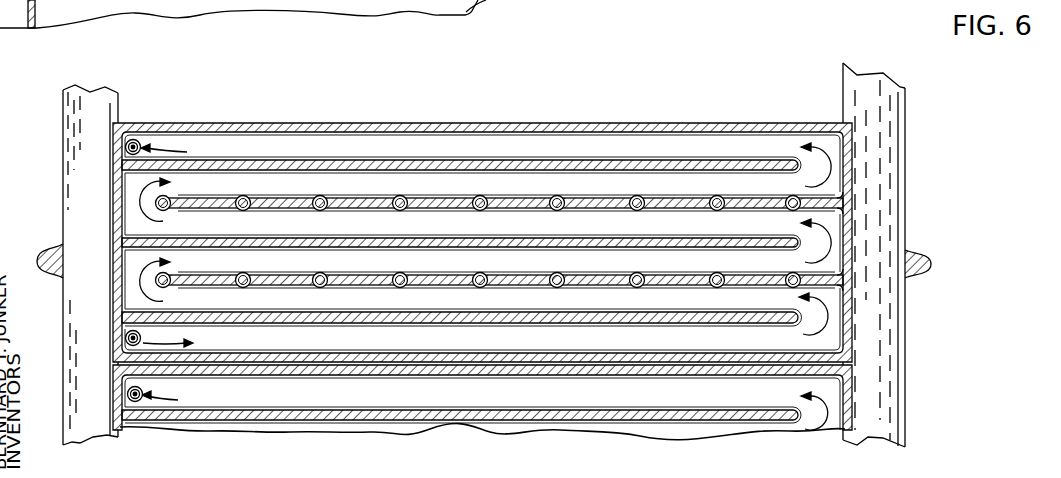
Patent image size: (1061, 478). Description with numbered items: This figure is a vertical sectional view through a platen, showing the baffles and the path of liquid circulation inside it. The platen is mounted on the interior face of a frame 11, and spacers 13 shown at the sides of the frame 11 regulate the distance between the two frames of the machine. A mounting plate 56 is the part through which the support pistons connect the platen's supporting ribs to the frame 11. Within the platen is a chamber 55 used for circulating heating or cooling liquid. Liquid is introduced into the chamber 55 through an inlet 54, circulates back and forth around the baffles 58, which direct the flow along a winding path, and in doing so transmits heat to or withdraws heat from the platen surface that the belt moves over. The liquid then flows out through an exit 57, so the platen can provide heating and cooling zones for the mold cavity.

The frame 11 is at (83, 112).
The spacer 13 is at (43, 249).
The inlet 54 is at (126, 339).
The chamber 55 is at (470, 153).
The mounting plate 56 is at (440, 15).
The exit 57 is at (134, 139).
The baffle 58 is at (202, 277).